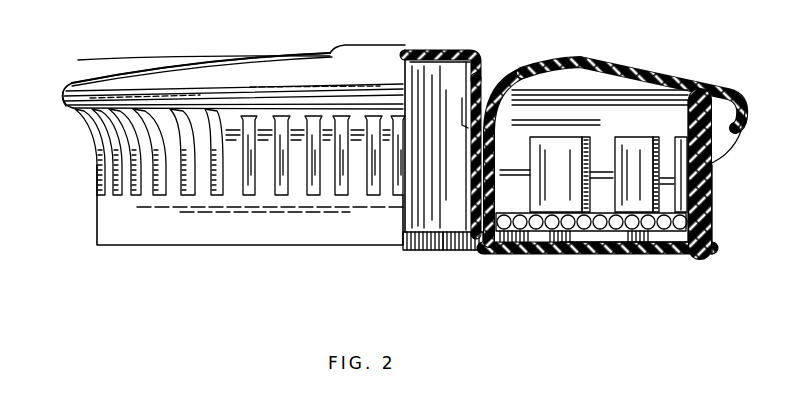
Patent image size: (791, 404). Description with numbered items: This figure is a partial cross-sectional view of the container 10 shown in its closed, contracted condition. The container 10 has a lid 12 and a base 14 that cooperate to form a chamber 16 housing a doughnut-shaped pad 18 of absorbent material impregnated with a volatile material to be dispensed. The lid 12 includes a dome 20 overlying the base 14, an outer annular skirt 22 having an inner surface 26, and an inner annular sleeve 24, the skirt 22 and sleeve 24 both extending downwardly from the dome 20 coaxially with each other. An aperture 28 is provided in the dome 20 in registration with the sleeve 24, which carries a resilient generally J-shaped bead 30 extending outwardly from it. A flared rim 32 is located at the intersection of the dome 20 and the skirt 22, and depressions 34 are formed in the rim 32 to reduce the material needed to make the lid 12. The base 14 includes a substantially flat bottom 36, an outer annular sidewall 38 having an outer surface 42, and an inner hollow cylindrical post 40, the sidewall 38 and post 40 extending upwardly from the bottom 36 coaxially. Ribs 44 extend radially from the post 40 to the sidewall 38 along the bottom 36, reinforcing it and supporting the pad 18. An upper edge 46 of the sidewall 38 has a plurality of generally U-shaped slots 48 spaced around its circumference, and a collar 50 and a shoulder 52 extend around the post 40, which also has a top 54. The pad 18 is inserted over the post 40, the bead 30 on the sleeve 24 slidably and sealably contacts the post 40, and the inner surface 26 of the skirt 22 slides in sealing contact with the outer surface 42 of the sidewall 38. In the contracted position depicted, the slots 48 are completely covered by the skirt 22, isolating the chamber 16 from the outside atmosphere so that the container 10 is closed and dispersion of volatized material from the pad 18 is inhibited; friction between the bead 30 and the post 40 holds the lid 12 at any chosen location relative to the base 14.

The container 10 is at (179, 58).
The lid 12 is at (228, 53).
The base 14 is at (505, 251).
The chamber 16 is at (620, 102).
The pad 18 is at (621, 255).
The dome 20 is at (148, 78).
The outer annular skirt 22 is at (98, 230).
The inner annular sleeve 24 is at (495, 160).
The inner surface 26 is at (700, 92).
The aperture 28 is at (497, 75).
The bead 30 is at (473, 214).
The flared rim 32 is at (64, 104).
The depressions 34 is at (277, 183).
The bottom 36 is at (445, 251).
The outer annular sidewall 38 is at (575, 180).
The inner hollow post 40 is at (466, 160).
The outer surface 42 is at (712, 183).
The ribs 44 is at (562, 254).
The upper edge 46 is at (653, 140).
The slots 48 is at (600, 150).
The collar 50 is at (468, 240).
The shoulder 52 is at (455, 113).
The top 54 is at (447, 50).